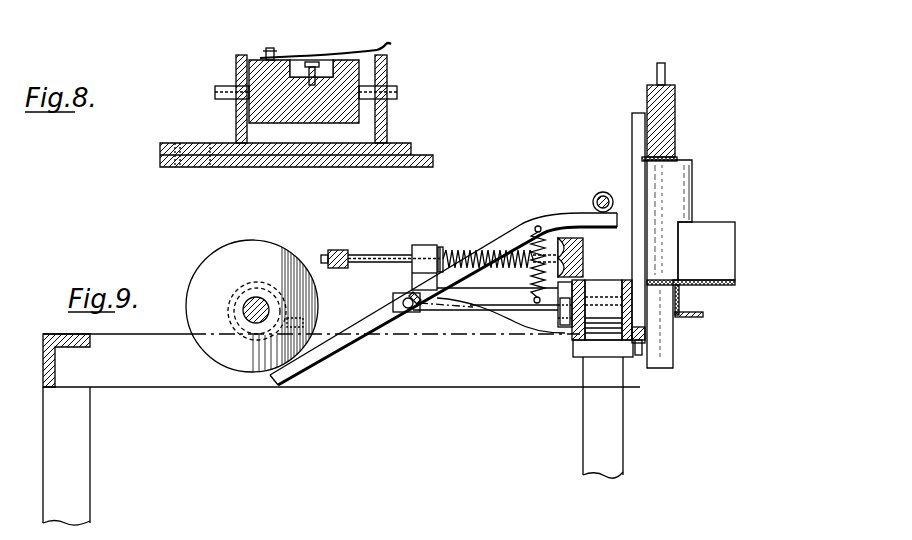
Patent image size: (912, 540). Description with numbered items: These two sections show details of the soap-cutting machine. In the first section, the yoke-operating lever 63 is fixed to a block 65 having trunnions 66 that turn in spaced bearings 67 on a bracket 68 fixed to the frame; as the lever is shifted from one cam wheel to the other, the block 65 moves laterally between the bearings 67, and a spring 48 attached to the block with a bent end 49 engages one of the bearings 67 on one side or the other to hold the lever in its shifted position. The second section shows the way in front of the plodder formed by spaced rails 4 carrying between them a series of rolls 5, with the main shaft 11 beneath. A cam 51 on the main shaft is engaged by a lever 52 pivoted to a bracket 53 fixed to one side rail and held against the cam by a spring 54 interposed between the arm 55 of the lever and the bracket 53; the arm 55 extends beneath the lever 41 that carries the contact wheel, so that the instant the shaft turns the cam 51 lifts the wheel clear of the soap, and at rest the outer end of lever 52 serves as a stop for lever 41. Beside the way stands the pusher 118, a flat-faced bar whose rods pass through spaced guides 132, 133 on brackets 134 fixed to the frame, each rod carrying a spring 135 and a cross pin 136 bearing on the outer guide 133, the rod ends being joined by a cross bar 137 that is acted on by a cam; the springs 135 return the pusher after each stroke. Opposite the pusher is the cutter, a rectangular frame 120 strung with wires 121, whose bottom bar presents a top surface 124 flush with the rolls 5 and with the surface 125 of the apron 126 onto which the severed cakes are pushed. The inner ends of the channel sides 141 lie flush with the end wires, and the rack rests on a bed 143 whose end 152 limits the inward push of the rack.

In FIG. 9, the rails 4 is at (573, 337).
In FIG. 9, the rolls 5 is at (606, 283).
In FIG. 9, the main shaft 11 is at (256, 320).
In FIG. 9, the lever 41 is at (609, 187).
In FIG. 8, the lever 48 is at (313, 54).
In FIG. 8, the bracket 49 is at (371, 48).
In FIG. 9, the cam 51 is at (317, 309).
In FIG. 9, the lever 52 is at (327, 347).
In FIG. 9, the bracket 53 is at (445, 311).
In FIG. 9, the spring 54 is at (541, 236).
In FIG. 9, the arm 55 is at (523, 229).
In FIG. 8, the lever 63 is at (333, 60).
In FIG. 8, the block 65 is at (363, 110).
In FIG. 8, the trunnions 66 is at (222, 76).
In FIG. 8, the bearings 67 is at (238, 126).
In FIG. 8, the bracket 68 is at (168, 131).
In FIG. 9, the pusher 118 is at (589, 254).
In FIG. 9, the rectangular frame 120 is at (675, 90).
In FIG. 9, the wires 121 is at (647, 197).
In FIG. 9, the top surface 124 is at (665, 290).
In FIG. 9, the surface 125 is at (712, 271).
In FIG. 9, the apron 126 is at (735, 246).
In FIG. 9, the guides 132 is at (545, 323).
In FIG. 9, the guides 133 is at (432, 236).
In FIG. 9, the brackets 134 is at (553, 322).
In FIG. 9, the spring 135 is at (480, 240).
In FIG. 9, the cross pin 136 is at (442, 247).
In FIG. 9, the cross bar 137 is at (344, 250).
In FIG. 9, the sides 141 is at (688, 209).
In FIG. 9, the bed 143 is at (695, 318).
In FIG. 9, the end 152 is at (680, 299).